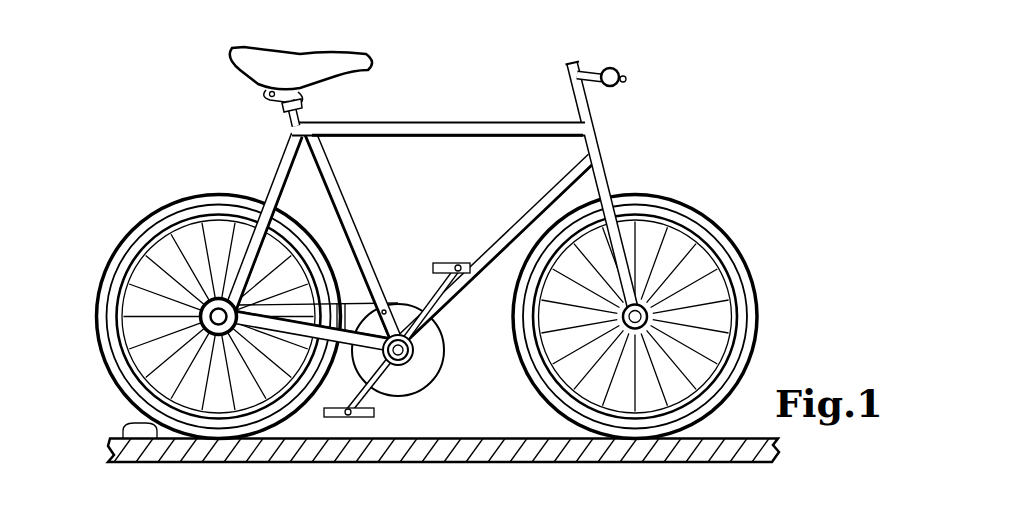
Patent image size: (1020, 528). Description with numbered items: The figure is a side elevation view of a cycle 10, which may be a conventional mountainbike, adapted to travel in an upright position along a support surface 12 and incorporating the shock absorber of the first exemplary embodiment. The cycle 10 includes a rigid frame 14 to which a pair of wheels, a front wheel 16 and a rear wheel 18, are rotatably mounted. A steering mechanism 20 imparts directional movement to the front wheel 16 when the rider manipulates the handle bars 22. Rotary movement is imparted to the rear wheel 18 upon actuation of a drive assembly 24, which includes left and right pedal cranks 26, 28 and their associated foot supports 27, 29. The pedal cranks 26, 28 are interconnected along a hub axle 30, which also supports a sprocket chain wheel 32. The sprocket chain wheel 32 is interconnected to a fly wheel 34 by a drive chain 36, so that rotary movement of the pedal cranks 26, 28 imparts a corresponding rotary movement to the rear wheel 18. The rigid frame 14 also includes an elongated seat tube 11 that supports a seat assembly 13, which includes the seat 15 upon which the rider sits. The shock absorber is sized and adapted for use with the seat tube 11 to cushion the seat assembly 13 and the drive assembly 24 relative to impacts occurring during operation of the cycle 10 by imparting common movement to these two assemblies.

The cycle 10 is at (640, 162).
The seat tube 11 is at (445, 181).
The support surface 12 is at (110, 442).
The seat assembly 13 is at (230, 74).
The rigid frame 14 is at (455, 121).
The seat 15 is at (303, 70).
The front wheel 16 is at (728, 248).
The rear wheel 18 is at (132, 245).
The steering mechanism 20 is at (656, 76).
The handle bars 22 is at (581, 62).
The drive assembly 24 is at (381, 355).
The left pedal crank 26 is at (433, 290).
The foot support 27 is at (447, 262).
The right pedal crank 28 is at (372, 395).
The foot support 29 is at (333, 418).
The hub axle 30 is at (405, 352).
The sprocket chain wheel 32 is at (438, 330).
The fly wheel 34 is at (118, 370).
The drive chain 36 is at (350, 303).